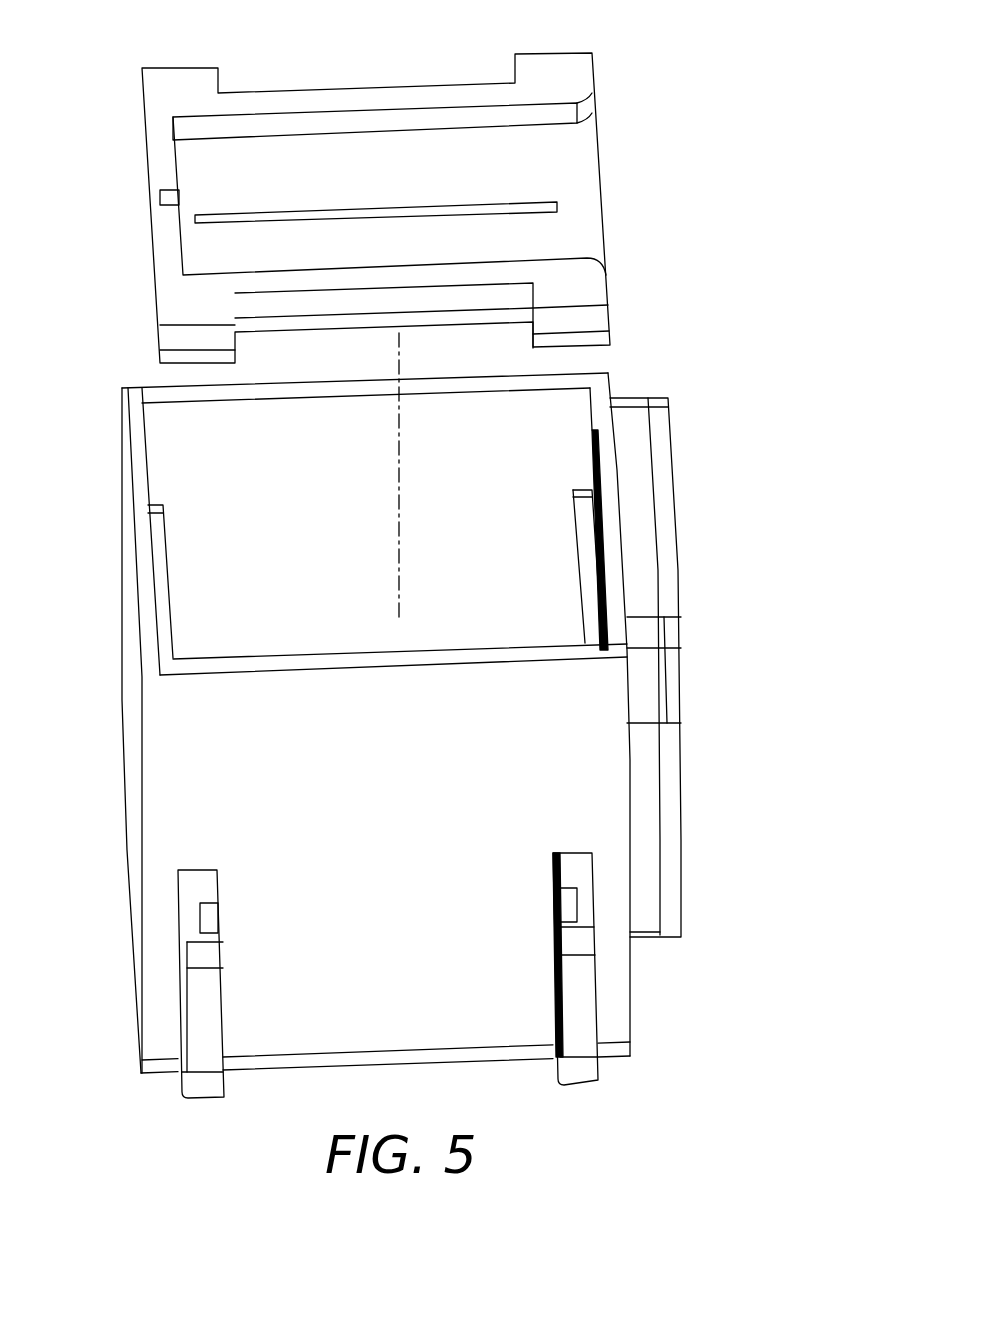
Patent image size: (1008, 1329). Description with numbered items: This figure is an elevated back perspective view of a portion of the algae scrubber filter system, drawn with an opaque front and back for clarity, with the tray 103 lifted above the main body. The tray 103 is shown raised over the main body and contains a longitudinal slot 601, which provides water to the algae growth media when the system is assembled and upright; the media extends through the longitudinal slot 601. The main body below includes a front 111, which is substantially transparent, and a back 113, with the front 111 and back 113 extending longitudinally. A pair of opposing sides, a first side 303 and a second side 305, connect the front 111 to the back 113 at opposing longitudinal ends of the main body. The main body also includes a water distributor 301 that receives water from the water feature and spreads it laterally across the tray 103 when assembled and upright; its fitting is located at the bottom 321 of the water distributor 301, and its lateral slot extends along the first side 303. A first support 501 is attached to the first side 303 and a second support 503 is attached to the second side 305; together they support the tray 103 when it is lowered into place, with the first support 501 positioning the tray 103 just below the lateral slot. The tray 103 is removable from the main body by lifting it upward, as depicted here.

The tray 103 is at (577, 87).
The longitudinal slot 601 is at (547, 205).
The front 111 is at (165, 393).
The second side 305 is at (140, 517).
The second support 503 is at (163, 592).
The first support 501 is at (588, 570).
The bottom of the water distributor 321 is at (640, 470).
The water distributor 301 is at (685, 670).
The first side 303 is at (620, 652).
The back 113 is at (305, 1037).